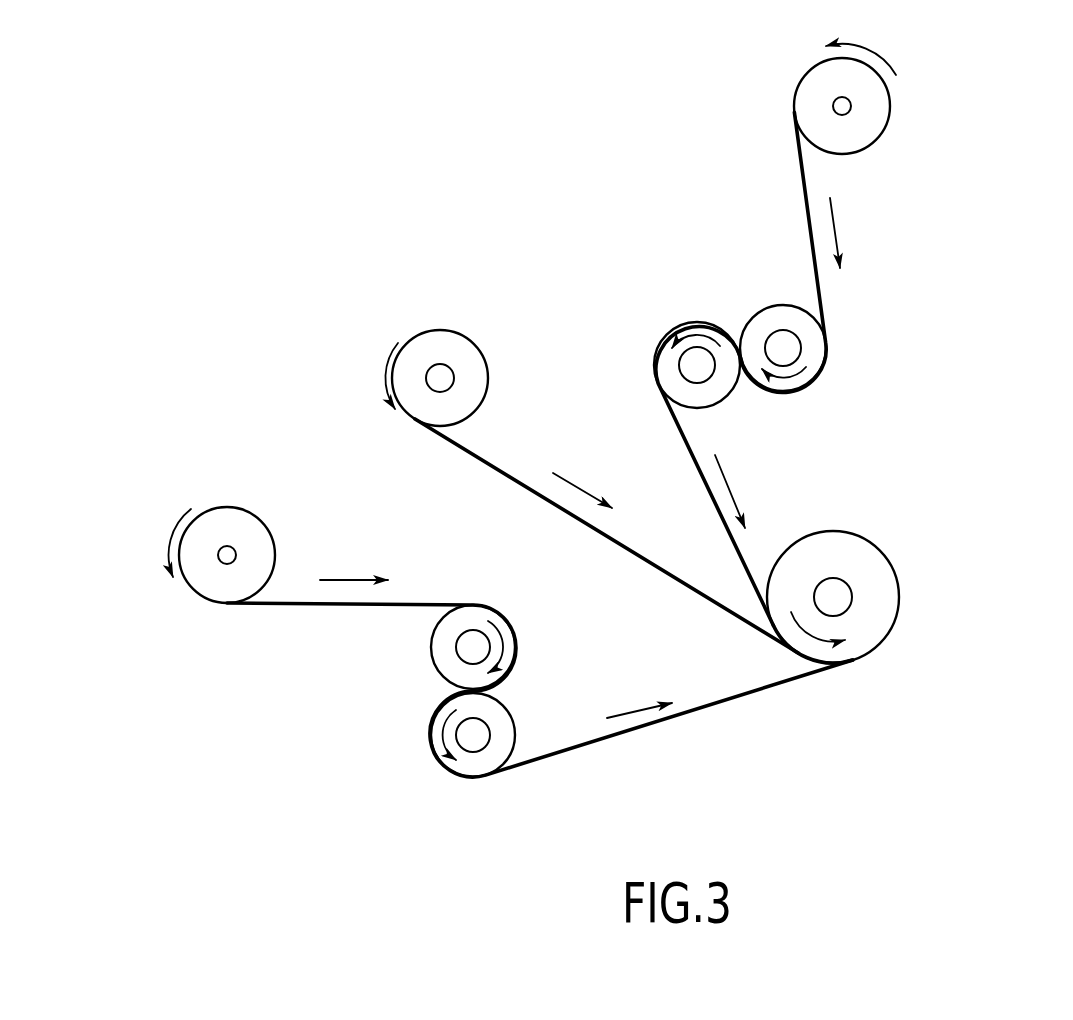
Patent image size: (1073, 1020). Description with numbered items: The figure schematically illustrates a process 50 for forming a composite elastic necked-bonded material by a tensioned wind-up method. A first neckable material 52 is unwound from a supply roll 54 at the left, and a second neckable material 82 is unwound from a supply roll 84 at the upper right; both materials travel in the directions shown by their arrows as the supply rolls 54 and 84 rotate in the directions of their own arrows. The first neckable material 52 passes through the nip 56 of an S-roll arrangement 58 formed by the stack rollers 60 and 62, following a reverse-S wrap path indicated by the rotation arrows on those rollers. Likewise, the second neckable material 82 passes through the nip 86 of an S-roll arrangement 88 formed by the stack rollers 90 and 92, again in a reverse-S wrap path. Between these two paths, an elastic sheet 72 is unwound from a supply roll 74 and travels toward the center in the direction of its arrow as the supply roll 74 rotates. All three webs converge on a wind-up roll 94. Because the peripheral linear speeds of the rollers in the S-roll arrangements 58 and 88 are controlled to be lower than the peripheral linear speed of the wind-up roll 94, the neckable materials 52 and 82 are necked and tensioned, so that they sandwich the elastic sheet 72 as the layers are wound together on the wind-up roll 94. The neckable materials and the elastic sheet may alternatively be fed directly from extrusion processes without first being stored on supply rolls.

The process for forming a composite elastic necked-bonded material 50 is at (974, 348).
The first neckable material 52 is at (283, 607).
The supply roll 54 is at (227, 507).
The nip 56 is at (512, 687).
The S-roll arrangement 58 is at (443, 690).
The stack roller 60 is at (445, 658).
The stack roller 62 is at (492, 708).
The elastic sheet 72 is at (470, 456).
The supply roll 74 is at (440, 342).
The second neckable material 82 is at (680, 430).
The supply roll 84 is at (872, 120).
The nip 86 is at (747, 390).
The S-roll arrangement 88 is at (742, 305).
The stack roller 90 is at (810, 347).
The stack roller 92 is at (660, 370).
The wind-up roll 94 is at (895, 645).